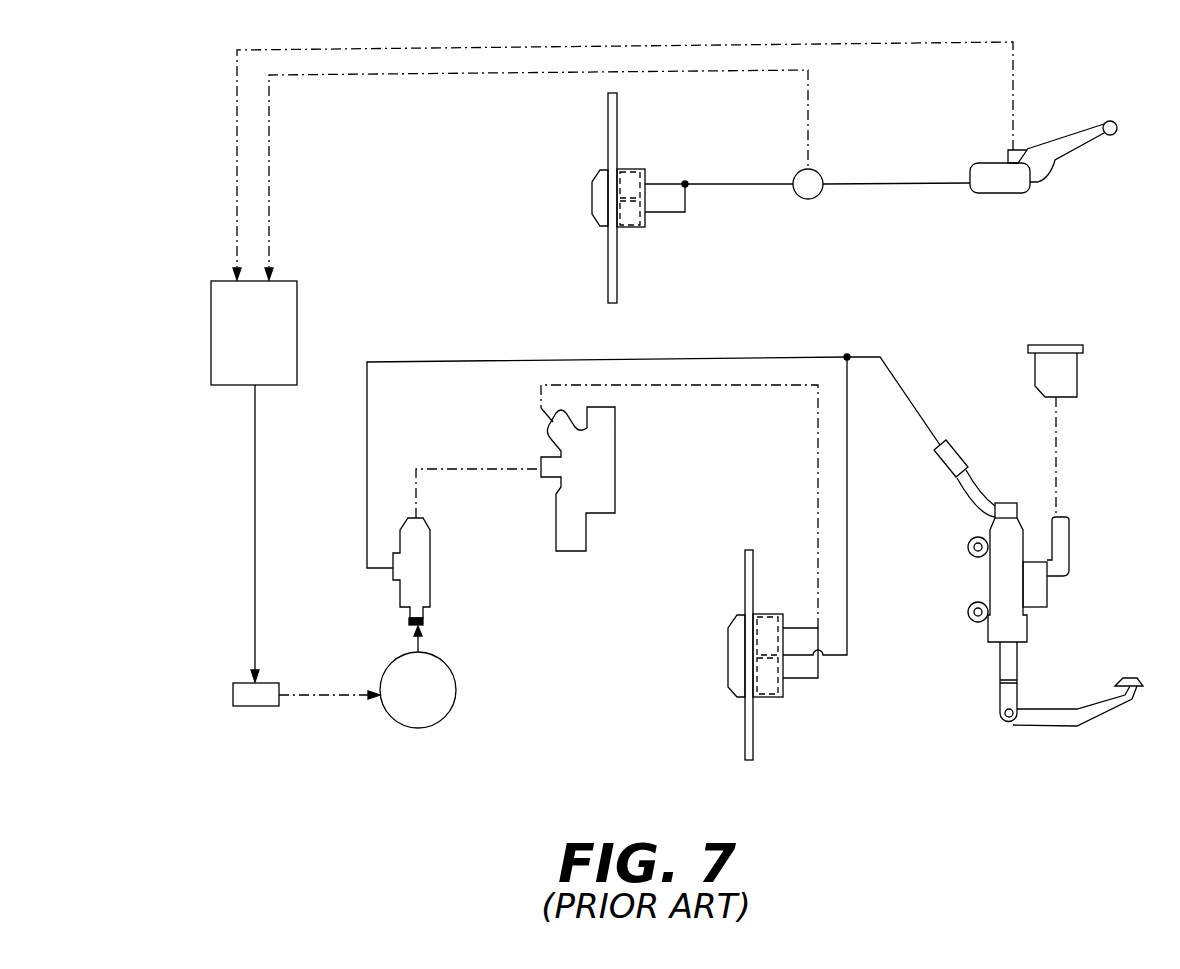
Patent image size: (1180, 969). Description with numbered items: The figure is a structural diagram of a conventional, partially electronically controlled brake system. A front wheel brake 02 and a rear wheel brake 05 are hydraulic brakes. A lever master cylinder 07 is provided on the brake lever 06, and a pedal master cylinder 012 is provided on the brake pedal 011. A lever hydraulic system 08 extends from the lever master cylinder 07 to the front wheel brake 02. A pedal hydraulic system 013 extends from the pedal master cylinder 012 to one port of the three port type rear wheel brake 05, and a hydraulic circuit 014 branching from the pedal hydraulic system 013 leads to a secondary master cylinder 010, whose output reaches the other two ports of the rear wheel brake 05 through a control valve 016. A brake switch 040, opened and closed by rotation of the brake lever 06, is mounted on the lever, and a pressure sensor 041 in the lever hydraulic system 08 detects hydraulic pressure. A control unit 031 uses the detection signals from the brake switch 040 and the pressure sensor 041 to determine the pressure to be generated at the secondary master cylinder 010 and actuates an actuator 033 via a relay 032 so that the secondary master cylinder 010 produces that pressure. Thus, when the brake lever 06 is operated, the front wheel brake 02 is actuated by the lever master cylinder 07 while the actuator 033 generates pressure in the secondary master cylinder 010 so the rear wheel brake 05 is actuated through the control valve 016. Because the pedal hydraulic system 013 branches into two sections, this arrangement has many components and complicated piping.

The front wheel brake 02 is at (570, 168).
The brake switch 040 is at (1005, 162).
The pressure sensor 041 is at (800, 199).
The lever hydraulic system 08 is at (888, 184).
The lever master cylinder 07 is at (995, 193).
The brake lever 06 is at (1067, 157).
The control unit 031 is at (297, 322).
The relay 032 is at (258, 706).
The actuator 033 is at (447, 715).
The secondary master cylinder 010 is at (430, 568).
The hydraulic circuit 014 is at (496, 360).
The control valve 016 is at (615, 460).
The pedal hydraulic system 013 is at (907, 395).
The pedal master cylinder 012 is at (990, 583).
The brake pedal 011 is at (1120, 682).
The rear wheel brake 05 is at (712, 695).